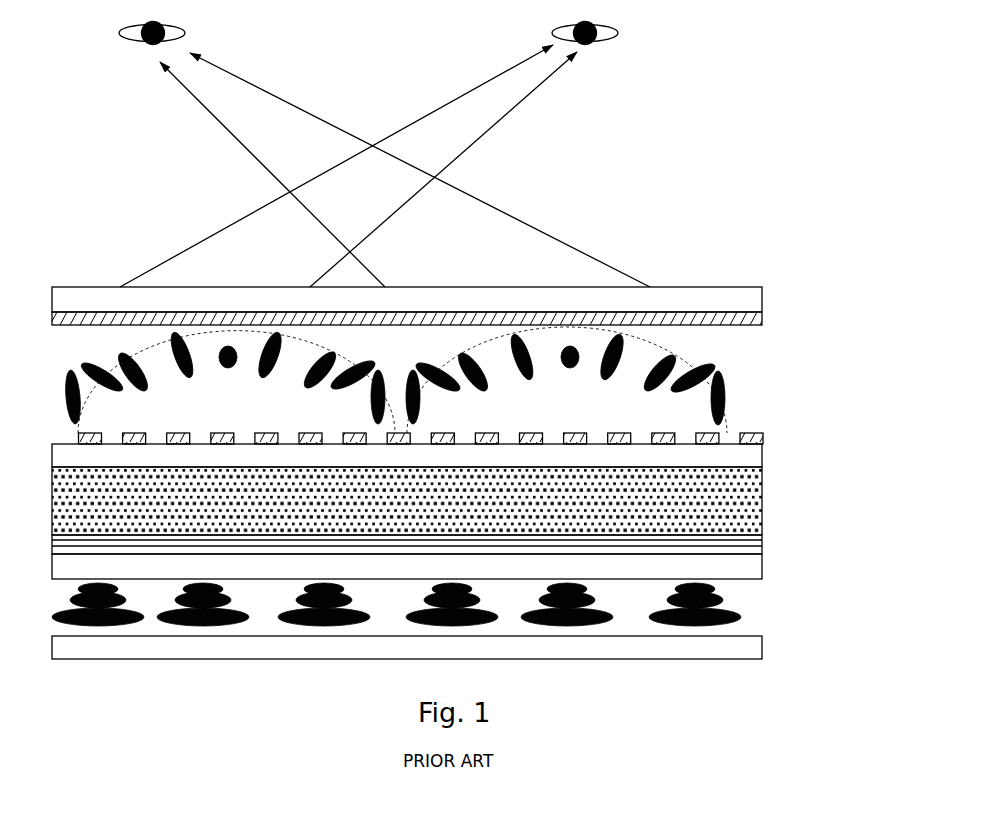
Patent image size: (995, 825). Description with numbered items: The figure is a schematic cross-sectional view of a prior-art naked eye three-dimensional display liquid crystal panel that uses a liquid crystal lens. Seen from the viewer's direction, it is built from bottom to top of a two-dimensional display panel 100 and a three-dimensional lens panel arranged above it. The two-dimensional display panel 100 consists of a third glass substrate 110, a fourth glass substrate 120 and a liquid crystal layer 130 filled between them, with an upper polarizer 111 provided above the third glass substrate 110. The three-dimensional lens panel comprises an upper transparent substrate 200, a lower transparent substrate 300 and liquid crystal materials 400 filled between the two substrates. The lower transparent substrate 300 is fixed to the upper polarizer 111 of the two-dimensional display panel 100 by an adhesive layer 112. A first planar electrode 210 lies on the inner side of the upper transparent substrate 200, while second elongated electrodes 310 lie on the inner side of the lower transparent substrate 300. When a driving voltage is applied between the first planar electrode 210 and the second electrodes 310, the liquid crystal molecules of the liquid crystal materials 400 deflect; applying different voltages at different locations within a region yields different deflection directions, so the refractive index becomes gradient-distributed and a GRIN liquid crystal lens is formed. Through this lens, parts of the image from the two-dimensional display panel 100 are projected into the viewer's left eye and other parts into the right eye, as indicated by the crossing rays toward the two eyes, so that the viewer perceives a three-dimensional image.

The 2D display panel 100 is at (456, 606).
The third glass substrate 110 is at (763, 571).
The upper polarizer 111 is at (762, 550).
The adhesive layer 112 is at (762, 492).
The fourth glass substrate 120 is at (435, 642).
The liquid crystal layer 130 is at (753, 604).
The upper transparent substrate 200 is at (762, 287).
The first planar electrode 210 is at (762, 318).
The lower transparent substrate 300 is at (762, 455).
The second elongated electrodes 310 is at (760, 436).
The liquid crystal materials 400 is at (747, 393).